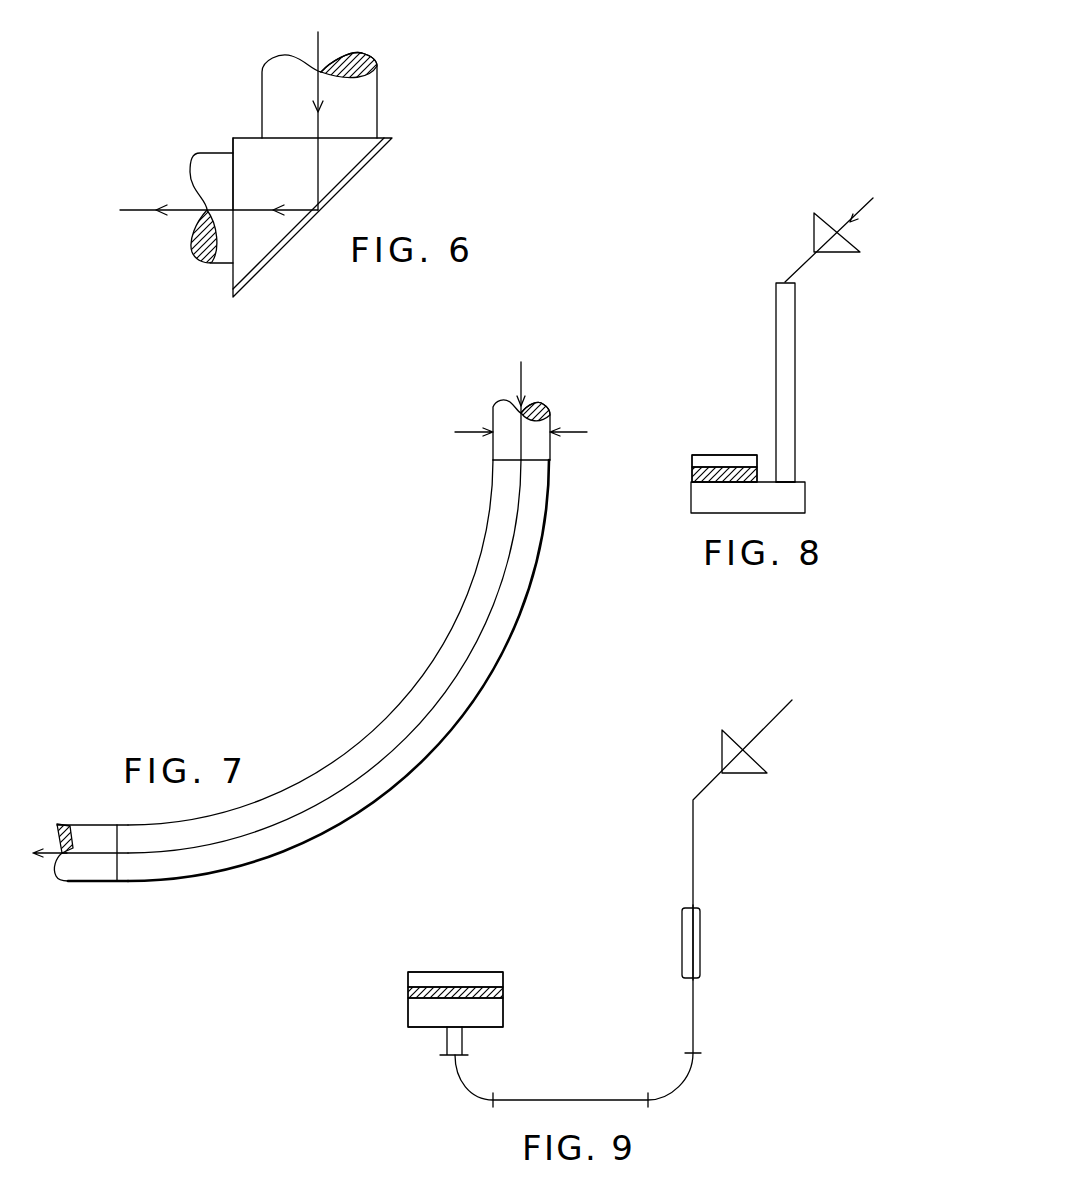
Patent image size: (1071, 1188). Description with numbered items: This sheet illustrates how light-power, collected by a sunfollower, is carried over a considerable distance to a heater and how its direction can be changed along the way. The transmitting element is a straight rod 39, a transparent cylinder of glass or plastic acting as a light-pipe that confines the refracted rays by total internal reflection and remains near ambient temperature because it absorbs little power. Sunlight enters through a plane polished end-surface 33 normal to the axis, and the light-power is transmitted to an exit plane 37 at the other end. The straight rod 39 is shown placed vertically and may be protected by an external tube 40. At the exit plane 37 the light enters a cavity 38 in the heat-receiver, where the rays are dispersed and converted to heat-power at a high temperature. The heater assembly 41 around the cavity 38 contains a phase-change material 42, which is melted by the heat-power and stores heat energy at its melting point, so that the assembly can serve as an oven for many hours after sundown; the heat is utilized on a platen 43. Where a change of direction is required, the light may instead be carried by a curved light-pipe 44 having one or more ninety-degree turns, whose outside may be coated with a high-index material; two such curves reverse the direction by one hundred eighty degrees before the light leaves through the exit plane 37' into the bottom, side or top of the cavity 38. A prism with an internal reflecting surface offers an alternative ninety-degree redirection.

In FIG. 8, the plane polished end-surface 33 is at (790, 281).
In FIG. 6, the exit plane 37 is at (341, 95).
In FIG. 7, the exit plane 37 is at (546, 433).
In FIG. 8, the exit plane 37 is at (812, 464).
In FIG. 7, the exit plane 37' is at (113, 871).
In FIG. 8, the cavity 38 is at (762, 506).
In FIG. 9, the cavity 38 is at (493, 1015).
In FIG. 8, the straight rod 39 is at (787, 385).
In FIG. 9, the straight rod 39 is at (693, 935).
In FIG. 9, the external tube 40 is at (700, 955).
In FIG. 8, the heater assembly 41 is at (718, 455).
In FIG. 9, the heater assembly 41 is at (472, 972).
In FIG. 8, the phase-change material 42 is at (692, 475).
In FIG. 9, the phase-change material 42 is at (503, 990).
In FIG. 8, the platen 43 is at (692, 458).
In FIG. 9, the platen 43 is at (503, 980).
In FIG. 7, the curved light-pipe 44 is at (516, 597).